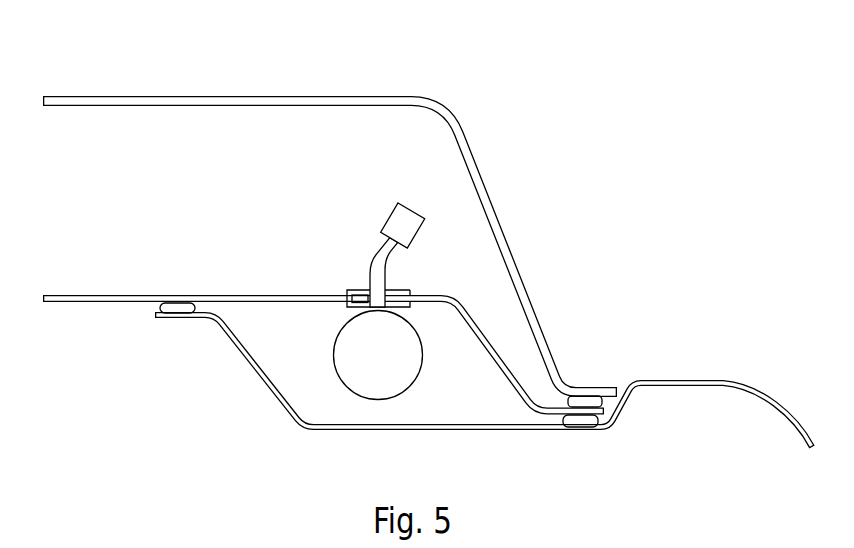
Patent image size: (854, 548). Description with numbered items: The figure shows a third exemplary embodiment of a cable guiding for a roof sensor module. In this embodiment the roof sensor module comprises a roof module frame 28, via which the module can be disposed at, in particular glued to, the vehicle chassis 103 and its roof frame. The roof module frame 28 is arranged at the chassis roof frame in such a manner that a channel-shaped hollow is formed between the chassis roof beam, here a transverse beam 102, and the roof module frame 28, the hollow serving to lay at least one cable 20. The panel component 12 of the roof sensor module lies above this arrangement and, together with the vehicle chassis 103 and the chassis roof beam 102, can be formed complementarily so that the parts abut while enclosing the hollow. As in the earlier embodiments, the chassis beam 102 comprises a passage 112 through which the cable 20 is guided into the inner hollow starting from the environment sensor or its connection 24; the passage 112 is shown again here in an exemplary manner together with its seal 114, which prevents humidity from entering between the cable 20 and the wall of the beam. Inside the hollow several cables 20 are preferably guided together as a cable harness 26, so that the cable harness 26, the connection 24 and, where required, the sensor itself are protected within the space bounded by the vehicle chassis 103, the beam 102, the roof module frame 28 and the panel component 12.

The panel component 12 is at (274, 97).
The roof module frame 28 is at (247, 296).
The cable 20 is at (376, 260).
The connection 24 is at (400, 215).
The cable harness 26 is at (383, 359).
The passage 112 is at (357, 300).
The seal 114 is at (367, 293).
The transverse beam 102 is at (483, 422).
The vehicle chassis 103 is at (673, 378).